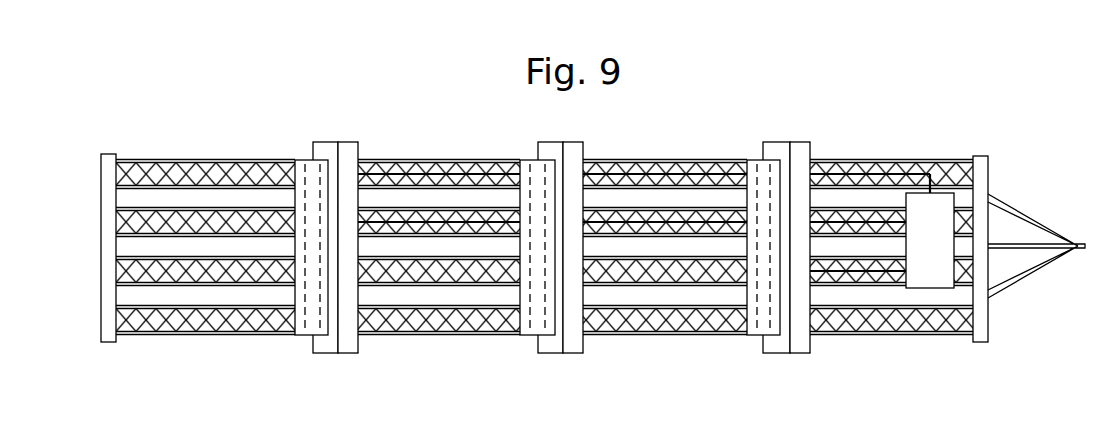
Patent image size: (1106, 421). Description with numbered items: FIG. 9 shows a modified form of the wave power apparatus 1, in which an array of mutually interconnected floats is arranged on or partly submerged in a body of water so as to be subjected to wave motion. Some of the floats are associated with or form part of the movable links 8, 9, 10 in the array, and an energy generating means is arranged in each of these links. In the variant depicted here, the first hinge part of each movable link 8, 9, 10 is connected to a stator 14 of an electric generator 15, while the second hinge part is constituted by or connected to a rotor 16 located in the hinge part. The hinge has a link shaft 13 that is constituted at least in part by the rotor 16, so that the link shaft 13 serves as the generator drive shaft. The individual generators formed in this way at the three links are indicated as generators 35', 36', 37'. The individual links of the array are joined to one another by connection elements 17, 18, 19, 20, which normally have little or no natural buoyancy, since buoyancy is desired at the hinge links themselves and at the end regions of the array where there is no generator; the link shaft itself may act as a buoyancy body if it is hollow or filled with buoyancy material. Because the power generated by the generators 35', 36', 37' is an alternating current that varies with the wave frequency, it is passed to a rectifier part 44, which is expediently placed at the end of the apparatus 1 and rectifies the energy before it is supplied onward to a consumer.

The wave power apparatus 1 is at (1037, 156).
The movable link 8 is at (805, 123).
The movable link 9 is at (550, 130).
The movable link 10 is at (325, 111).
The link shaft 13 is at (540, 208).
The stator 14 is at (525, 198).
The electric generator 15 is at (523, 349).
The rotor 16 is at (605, 173).
The connection element 17 is at (916, 158).
The connection element 18 is at (708, 163).
The connection element 19 is at (442, 161).
The connection element 20 is at (237, 161).
The generator 35' is at (736, 278).
The generator 36' is at (579, 278).
The generator 37' is at (263, 278).
The rectifier part 44 is at (932, 262).